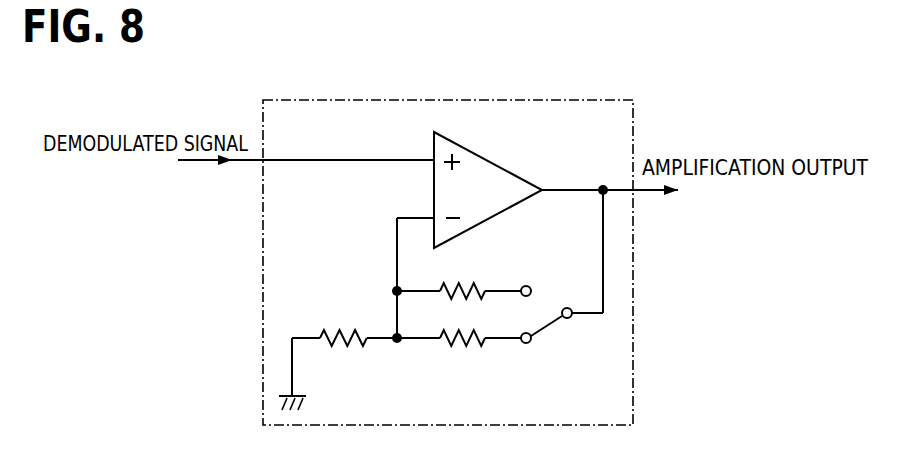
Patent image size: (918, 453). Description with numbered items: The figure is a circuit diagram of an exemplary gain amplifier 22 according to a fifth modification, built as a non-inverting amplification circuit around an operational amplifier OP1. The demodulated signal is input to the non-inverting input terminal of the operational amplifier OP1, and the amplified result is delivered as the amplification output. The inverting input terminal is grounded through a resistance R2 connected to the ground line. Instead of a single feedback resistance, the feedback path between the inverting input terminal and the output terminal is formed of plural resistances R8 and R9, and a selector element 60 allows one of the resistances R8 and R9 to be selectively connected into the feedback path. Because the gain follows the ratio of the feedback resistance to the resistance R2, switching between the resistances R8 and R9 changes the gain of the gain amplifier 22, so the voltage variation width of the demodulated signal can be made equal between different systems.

The gain amplifier 22 is at (453, 99).
The operational amplifier OP1 is at (486, 160).
The resistance R9 is at (462, 283).
The resistance R8 is at (464, 346).
The resistance R2 is at (336, 347).
The switch 60 is at (545, 298).